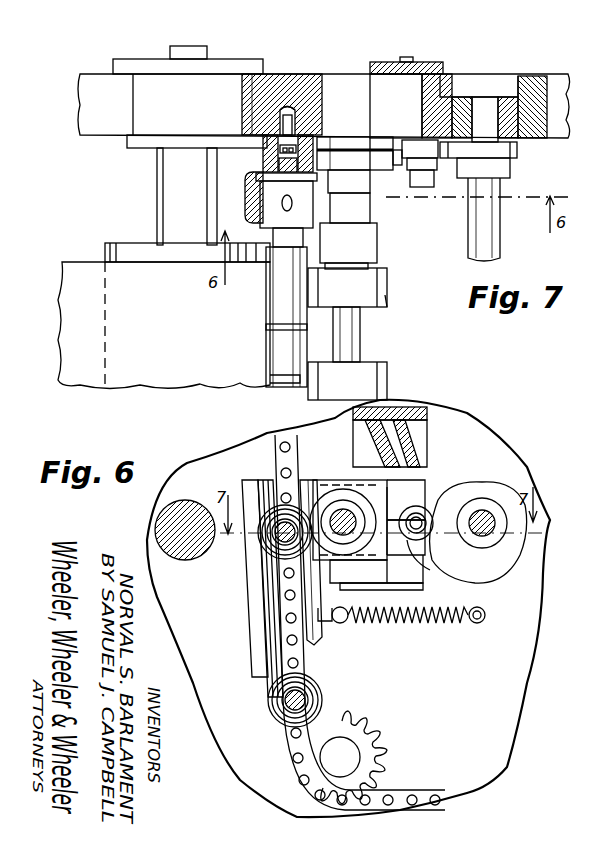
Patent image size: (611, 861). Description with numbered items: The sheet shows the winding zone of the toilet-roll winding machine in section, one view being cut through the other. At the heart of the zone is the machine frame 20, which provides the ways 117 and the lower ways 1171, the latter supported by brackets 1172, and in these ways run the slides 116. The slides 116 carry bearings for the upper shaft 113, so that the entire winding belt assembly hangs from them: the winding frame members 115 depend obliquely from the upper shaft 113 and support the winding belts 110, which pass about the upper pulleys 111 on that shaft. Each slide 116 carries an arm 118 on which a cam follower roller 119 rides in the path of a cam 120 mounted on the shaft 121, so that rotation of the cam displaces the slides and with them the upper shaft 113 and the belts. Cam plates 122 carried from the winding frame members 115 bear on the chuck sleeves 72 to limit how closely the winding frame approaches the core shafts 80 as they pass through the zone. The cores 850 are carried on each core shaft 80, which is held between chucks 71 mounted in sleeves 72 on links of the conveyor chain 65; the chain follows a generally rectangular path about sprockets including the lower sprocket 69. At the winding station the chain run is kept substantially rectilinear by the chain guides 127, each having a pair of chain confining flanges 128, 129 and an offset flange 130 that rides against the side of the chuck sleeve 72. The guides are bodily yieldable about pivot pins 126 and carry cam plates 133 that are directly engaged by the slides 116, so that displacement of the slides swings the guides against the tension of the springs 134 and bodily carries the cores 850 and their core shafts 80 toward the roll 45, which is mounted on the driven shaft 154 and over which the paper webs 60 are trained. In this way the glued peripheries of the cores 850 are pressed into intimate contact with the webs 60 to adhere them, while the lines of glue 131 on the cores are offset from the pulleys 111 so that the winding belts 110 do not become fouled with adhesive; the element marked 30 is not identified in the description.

In FIG. 7, the machine frame 20 is at (305, 80).
In FIG. 6, the machine frame 20 is at (433, 427).
In FIG. 7, the base member 30 is at (108, 390).
In FIG. 7, the roll 45 is at (105, 250).
In FIG. 7, the webs 60 is at (262, 385).
In FIG. 7, the chain 65 is at (303, 138).
In FIG. 6, the chain 65 is at (292, 448).
In FIG. 6, the lower sprocket 69 is at (372, 718).
In FIG. 6, the chucks 71 is at (268, 555).
In FIG. 7, the sleeve 72 is at (270, 230).
In FIG. 7, the core shaft 80 is at (275, 258).
In FIG. 6, the core shaft 80 is at (272, 548).
In FIG. 7, the cores 850 is at (290, 294).
In FIG. 7, the winding belts 110 is at (385, 290).
In FIG. 7, the upper pulleys 111 is at (385, 300).
In FIG. 7, the upper shaft 113 is at (360, 336).
In FIG. 6, the upper shaft 113 is at (342, 520).
In FIG. 7, the winding frame members 115 is at (380, 242).
In FIG. 7, the slides 116 is at (372, 140).
In FIG. 6, the slides 116 is at (395, 500).
In FIG. 6, the ways 117 is at (405, 480).
In FIG. 7, the arm 118 is at (420, 180).
In FIG. 6, the arm 118 is at (430, 565).
In FIG. 7, the cam follower roller 119 is at (410, 165).
In FIG. 6, the cam follower roller 119 is at (420, 510).
In FIG. 7, the cam 120 is at (515, 152).
In FIG. 6, the cam 120 is at (450, 540).
In FIG. 7, the shaft 121 is at (500, 185).
In FIG. 6, the shaft 121 is at (483, 512).
In FIG. 7, the cam plates 122 is at (372, 195).
In FIG. 7, the pivot pins 126 is at (272, 150).
In FIG. 6, the pivot pins 126 is at (262, 690).
In FIG. 7, the chain guides 127 is at (257, 150).
In FIG. 6, the chain guides 127 is at (255, 485).
In FIG. 7, the chain confining flange 128 is at (280, 150).
In FIG. 7, the chain confining flange 129 is at (279, 166).
In FIG. 6, the offset flange 130 is at (268, 640).
In FIG. 7, the lines of glue 131 is at (282, 328).
In FIG. 7, the cam plates 133 is at (325, 147).
In FIG. 6, the cam plates 133 is at (320, 623).
In FIG. 6, the springs 134 is at (432, 626).
In FIG. 7, the shaft 154 is at (180, 205).
In FIG. 7, the lower ways 1171 is at (398, 135).
In FIG. 6, the lower ways 1171 is at (400, 585).
In FIG. 7, the brackets 1172 is at (400, 90).
In FIG. 6, the brackets 1172 is at (388, 585).